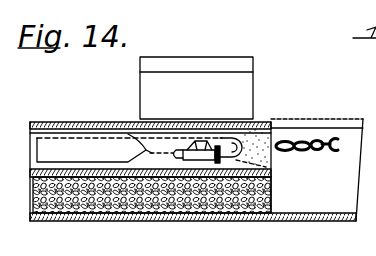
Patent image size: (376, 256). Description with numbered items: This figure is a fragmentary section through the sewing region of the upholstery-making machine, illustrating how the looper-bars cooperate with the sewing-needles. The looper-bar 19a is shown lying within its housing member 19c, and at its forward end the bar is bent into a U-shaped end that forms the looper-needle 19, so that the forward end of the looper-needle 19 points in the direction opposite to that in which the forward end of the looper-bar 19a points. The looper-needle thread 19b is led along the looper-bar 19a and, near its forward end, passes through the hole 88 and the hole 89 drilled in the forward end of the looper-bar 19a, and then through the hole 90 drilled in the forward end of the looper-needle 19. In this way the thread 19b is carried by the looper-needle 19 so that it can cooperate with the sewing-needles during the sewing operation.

The looper-needle 19 is at (220, 135).
The looper-bar 19a is at (77, 98).
The looper-needle thread 19b is at (13, 138).
The housing member 19c is at (140, 152).
The hole 88 is at (247, 133).
The hole 89 is at (271, 160).
The hole 90 is at (133, 149).